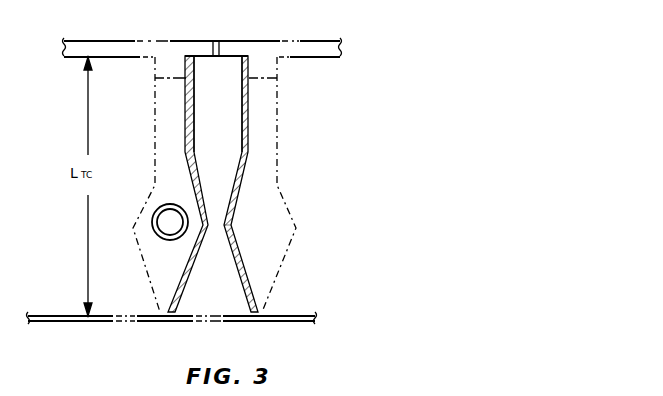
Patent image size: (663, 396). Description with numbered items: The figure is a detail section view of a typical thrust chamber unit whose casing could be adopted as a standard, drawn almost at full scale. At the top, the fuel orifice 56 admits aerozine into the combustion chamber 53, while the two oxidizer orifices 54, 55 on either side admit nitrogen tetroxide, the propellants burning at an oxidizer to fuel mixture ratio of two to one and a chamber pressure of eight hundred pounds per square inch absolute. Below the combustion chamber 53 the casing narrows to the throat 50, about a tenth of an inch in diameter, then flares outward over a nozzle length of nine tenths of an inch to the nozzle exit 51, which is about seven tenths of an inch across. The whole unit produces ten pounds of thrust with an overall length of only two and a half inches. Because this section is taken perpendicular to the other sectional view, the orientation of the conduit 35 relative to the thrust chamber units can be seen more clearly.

The conduit 35 is at (180, 205).
The throat 50 is at (229, 226).
The nozzle exit 51 is at (200, 313).
The combustion chamber 53 is at (216, 104).
The oxidizer orifice 54 is at (185, 85).
The oxidizer orifice 55 is at (248, 85).
The fuel orifice 56 is at (219, 41).